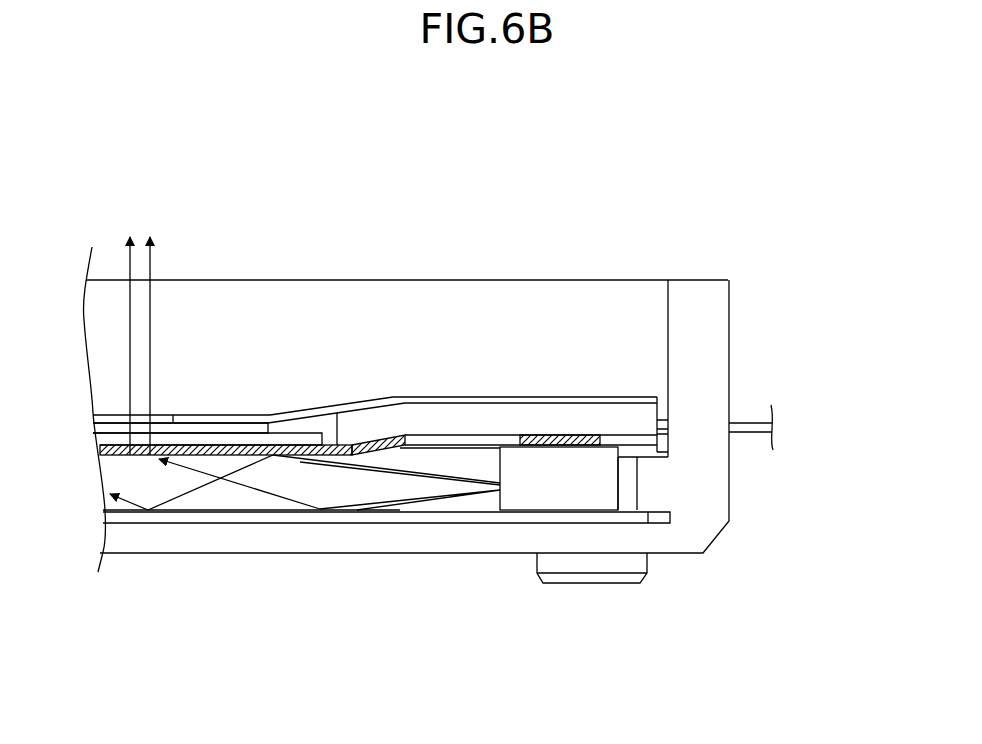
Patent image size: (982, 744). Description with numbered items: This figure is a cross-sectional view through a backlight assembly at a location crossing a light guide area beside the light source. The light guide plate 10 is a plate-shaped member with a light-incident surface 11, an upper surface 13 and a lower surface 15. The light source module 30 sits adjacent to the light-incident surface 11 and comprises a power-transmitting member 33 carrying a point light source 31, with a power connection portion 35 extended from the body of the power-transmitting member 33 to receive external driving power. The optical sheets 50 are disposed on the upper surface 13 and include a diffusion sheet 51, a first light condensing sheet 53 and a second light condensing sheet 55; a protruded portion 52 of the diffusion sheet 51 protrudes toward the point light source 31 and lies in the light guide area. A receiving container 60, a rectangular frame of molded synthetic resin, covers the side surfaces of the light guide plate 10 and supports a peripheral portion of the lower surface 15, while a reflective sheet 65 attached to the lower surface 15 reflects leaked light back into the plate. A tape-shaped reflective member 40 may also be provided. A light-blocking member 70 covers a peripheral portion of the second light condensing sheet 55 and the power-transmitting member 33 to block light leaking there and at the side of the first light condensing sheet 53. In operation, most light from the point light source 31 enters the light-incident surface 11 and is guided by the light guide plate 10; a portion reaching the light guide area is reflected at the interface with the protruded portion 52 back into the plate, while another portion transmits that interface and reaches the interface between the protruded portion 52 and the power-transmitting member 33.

The light guide plate 10 is at (386, 557).
The light-incident surface 11 is at (497, 503).
The upper surface 13 is at (418, 449).
The lower surface 15 is at (365, 513).
The light source module 30 is at (635, 389).
The point light source 31 is at (595, 457).
The power-transmitting member 33 is at (587, 413).
The power connection portion 35 is at (771, 418).
The reflective member 40 is at (645, 443).
The optical sheets 50 is at (312, 209).
The diffusion sheet 51 is at (288, 445).
The protruded portion 52 is at (382, 440).
The first light condensing sheet 53 is at (250, 437).
The second light condensing sheet 55 is at (183, 427).
The receiving container 60 is at (713, 500).
The reflective sheet 65 is at (273, 516).
The light-blocking member 70 is at (565, 397).